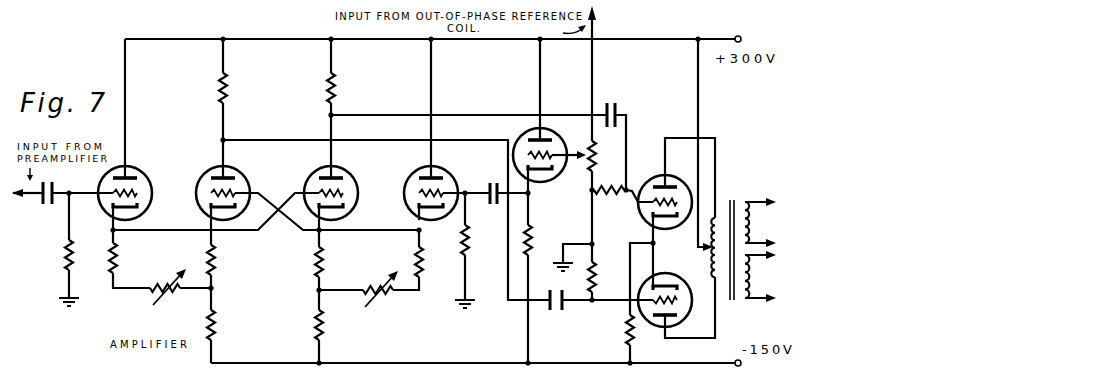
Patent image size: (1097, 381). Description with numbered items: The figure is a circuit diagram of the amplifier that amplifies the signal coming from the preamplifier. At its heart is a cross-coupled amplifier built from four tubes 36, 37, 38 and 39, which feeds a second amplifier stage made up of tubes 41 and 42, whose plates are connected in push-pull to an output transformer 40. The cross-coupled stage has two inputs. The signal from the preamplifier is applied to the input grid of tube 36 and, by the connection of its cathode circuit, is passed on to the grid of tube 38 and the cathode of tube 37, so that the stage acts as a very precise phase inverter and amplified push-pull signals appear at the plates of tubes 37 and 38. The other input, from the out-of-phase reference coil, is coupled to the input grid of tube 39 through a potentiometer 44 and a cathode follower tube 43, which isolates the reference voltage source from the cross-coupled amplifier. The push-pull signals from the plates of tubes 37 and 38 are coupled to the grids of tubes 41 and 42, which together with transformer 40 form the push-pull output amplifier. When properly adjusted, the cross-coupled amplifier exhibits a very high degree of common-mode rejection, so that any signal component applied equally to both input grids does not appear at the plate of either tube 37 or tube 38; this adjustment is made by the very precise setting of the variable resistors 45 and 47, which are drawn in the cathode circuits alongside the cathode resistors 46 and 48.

The tube 36 is at (143, 182).
The tube 37 is at (243, 182).
The tube 38 is at (352, 182).
The tube 39 is at (449, 182).
The transformer 40 is at (735, 198).
The tube 41 is at (652, 176).
The tube 42 is at (686, 278).
The cathode follower tube 43 is at (565, 180).
The potentiometer 44 is at (604, 168).
The resistor 45 is at (161, 281).
The cathode resistor 46 is at (217, 334).
The resistor 47 is at (374, 281).
The cathode resistor 48 is at (328, 334).